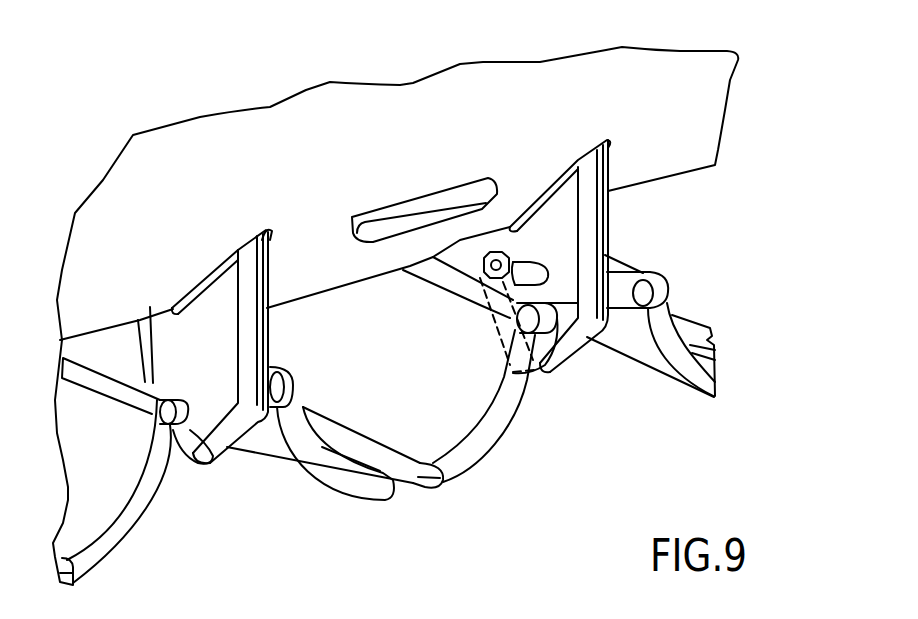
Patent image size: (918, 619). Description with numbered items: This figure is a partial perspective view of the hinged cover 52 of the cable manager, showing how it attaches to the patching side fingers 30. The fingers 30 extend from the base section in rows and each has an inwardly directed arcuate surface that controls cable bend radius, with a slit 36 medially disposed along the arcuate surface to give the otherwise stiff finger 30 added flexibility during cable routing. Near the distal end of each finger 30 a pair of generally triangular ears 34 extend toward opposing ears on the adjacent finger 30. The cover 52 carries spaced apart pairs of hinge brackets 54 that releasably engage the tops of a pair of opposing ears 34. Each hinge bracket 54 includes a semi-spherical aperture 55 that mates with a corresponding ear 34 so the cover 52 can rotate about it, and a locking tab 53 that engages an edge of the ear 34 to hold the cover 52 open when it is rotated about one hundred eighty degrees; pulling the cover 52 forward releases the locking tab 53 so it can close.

The patching side finger 30 is at (120, 535).
The ear 34 is at (150, 307).
The slit 36 is at (368, 448).
The front cover 52 is at (650, 103).
The locking tab 53 is at (487, 250).
The hinge bracket 54 is at (245, 297).
The semi-spherical aperture 55 is at (545, 285).